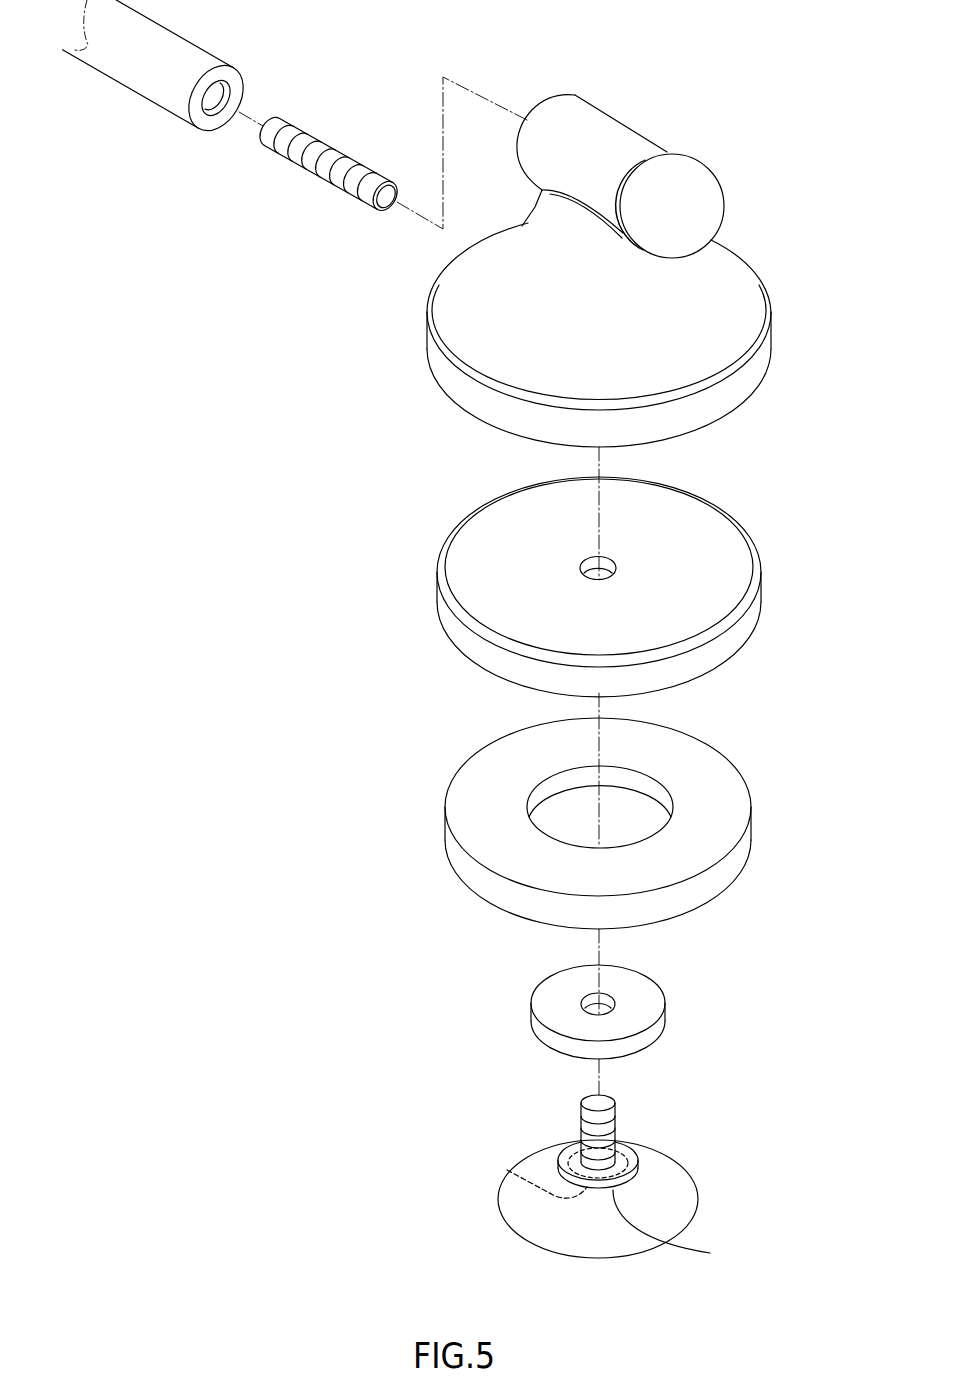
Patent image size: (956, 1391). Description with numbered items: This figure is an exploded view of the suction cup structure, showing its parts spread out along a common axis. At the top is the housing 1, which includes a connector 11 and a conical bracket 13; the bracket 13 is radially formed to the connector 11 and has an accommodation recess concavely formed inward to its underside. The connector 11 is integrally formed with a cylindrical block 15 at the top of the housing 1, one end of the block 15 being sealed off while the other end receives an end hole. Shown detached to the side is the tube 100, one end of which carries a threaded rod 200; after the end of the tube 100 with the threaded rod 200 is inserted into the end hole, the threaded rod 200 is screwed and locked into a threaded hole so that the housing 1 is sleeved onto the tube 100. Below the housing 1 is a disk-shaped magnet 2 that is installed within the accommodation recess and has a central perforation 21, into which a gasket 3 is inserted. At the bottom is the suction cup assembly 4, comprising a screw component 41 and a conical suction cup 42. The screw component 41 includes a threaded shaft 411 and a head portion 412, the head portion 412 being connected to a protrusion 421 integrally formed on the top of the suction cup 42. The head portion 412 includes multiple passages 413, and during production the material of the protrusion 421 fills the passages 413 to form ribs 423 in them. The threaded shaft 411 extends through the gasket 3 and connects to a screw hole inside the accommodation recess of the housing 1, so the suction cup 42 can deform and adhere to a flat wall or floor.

The housing 1 is at (543, 275).
The connector 11 is at (644, 139).
The conical bracket 13 is at (483, 426).
The cylindrical block 15 is at (592, 120).
The tube 100 is at (162, 98).
The threaded rod 200 is at (317, 173).
The disk-shaped magnet 2 is at (643, 831).
The central perforation 21 is at (648, 801).
The gasket 3 is at (658, 1025).
The suction cup assembly 4 is at (541, 1160).
The screw component 41 is at (509, 1111).
The threaded shaft 411 is at (587, 1106).
The head portion 412 is at (507, 1170).
The passages 413 is at (568, 1150).
The suction cup 42 is at (563, 1194).
The protrusion 421 is at (679, 1238).
The ribs 423 is at (505, 1150).